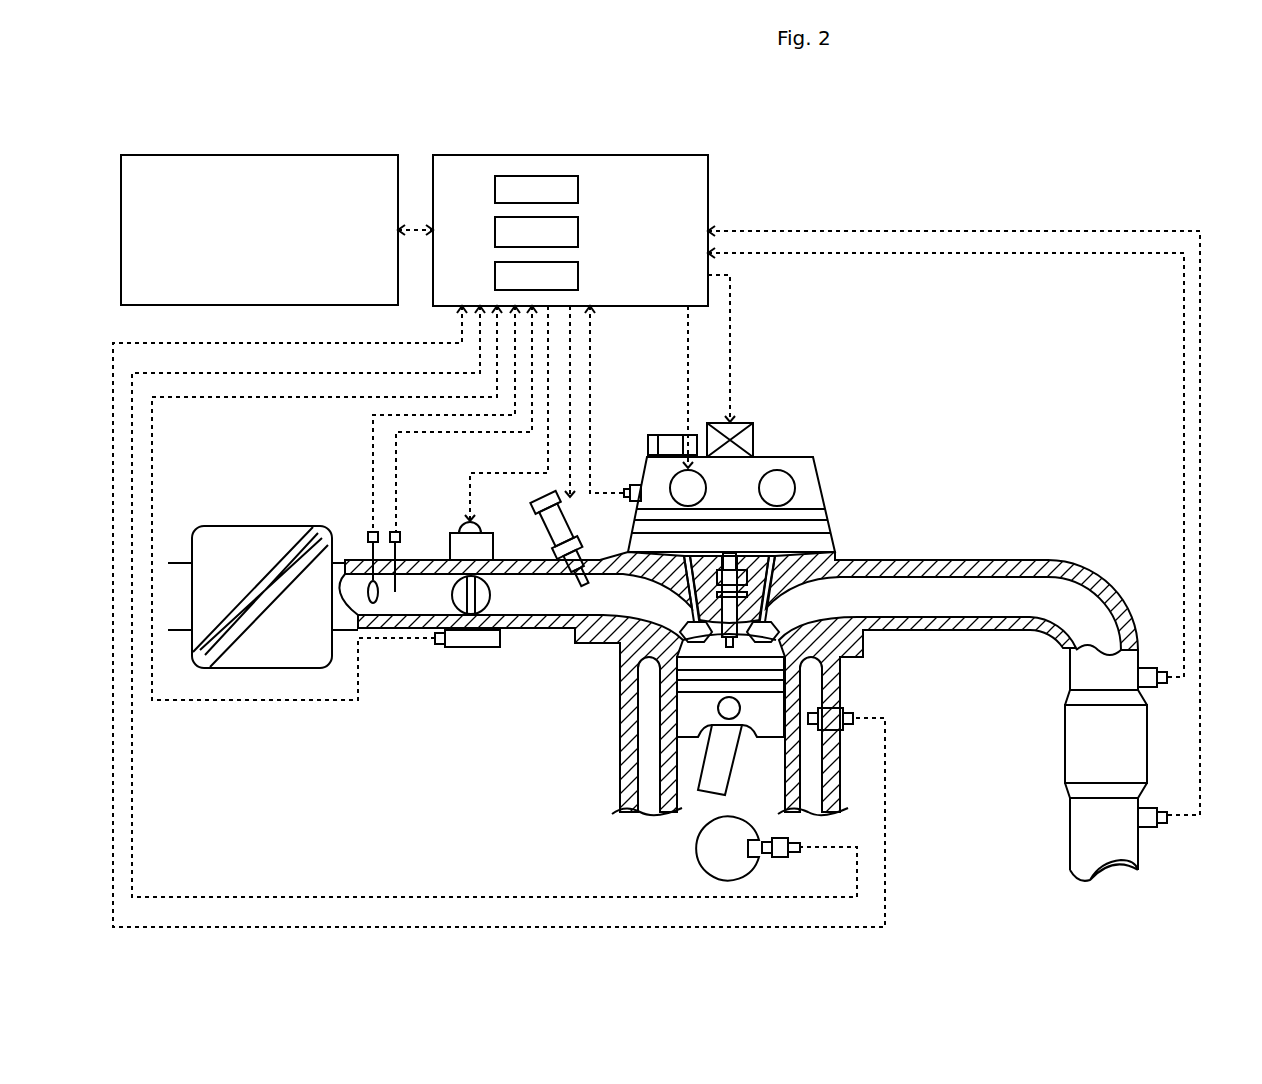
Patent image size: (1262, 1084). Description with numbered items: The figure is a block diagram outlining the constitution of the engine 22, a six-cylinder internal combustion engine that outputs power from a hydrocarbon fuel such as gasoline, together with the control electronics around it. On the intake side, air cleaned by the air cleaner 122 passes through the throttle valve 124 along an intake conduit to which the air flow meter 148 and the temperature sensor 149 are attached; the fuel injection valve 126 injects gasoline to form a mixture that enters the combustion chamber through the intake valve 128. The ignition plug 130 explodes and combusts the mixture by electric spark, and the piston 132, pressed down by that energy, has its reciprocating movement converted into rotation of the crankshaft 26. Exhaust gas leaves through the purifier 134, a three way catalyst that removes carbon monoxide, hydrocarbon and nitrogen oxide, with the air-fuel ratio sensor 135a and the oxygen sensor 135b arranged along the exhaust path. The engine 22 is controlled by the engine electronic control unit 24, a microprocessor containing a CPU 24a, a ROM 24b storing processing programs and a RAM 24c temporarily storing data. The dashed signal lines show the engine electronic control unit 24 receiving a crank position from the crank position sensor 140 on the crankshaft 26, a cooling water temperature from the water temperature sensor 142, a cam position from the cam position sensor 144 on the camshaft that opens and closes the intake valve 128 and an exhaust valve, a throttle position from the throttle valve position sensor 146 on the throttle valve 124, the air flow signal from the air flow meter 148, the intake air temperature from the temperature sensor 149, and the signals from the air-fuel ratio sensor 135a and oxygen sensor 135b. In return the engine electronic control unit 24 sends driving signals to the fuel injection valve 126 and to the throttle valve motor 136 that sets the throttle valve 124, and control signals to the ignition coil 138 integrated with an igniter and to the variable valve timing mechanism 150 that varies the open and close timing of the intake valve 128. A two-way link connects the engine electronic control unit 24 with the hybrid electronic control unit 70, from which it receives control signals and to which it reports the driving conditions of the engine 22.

The hybrid electronic control unit 70 is at (260, 155).
The engine electronic control unit 24 is at (570, 203).
The CPU 24a is at (578, 189).
The ROM 24b is at (578, 230).
The RAM 24c is at (578, 278).
The engine 22 is at (770, 611).
The air cleaner 122 is at (262, 526).
The throttle valve 124 is at (490, 578).
The fuel injection valve 126 is at (580, 588).
The intake valve 128 is at (693, 630).
The ignition plug 130 is at (733, 627).
The piston 132 is at (693, 708).
The purifier (three way catalyst) 134 is at (1073, 730).
The air-fuel ratio sensor 135a is at (1142, 667).
The oxygen sensor 135b is at (1145, 832).
The throttle valve motor 136 is at (460, 522).
The ignition coil 138 is at (755, 440).
The crank position sensor 140 is at (800, 858).
The water temperature sensor 142 is at (845, 706).
The cam position sensor 144 is at (630, 482).
The throttle valve position sensor 146 is at (472, 648).
The air flow meter 148 is at (368, 533).
The temperature sensor 149 is at (403, 530).
The variable valve timing mechanism 150 is at (820, 497).
The crankshaft 26 is at (697, 850).